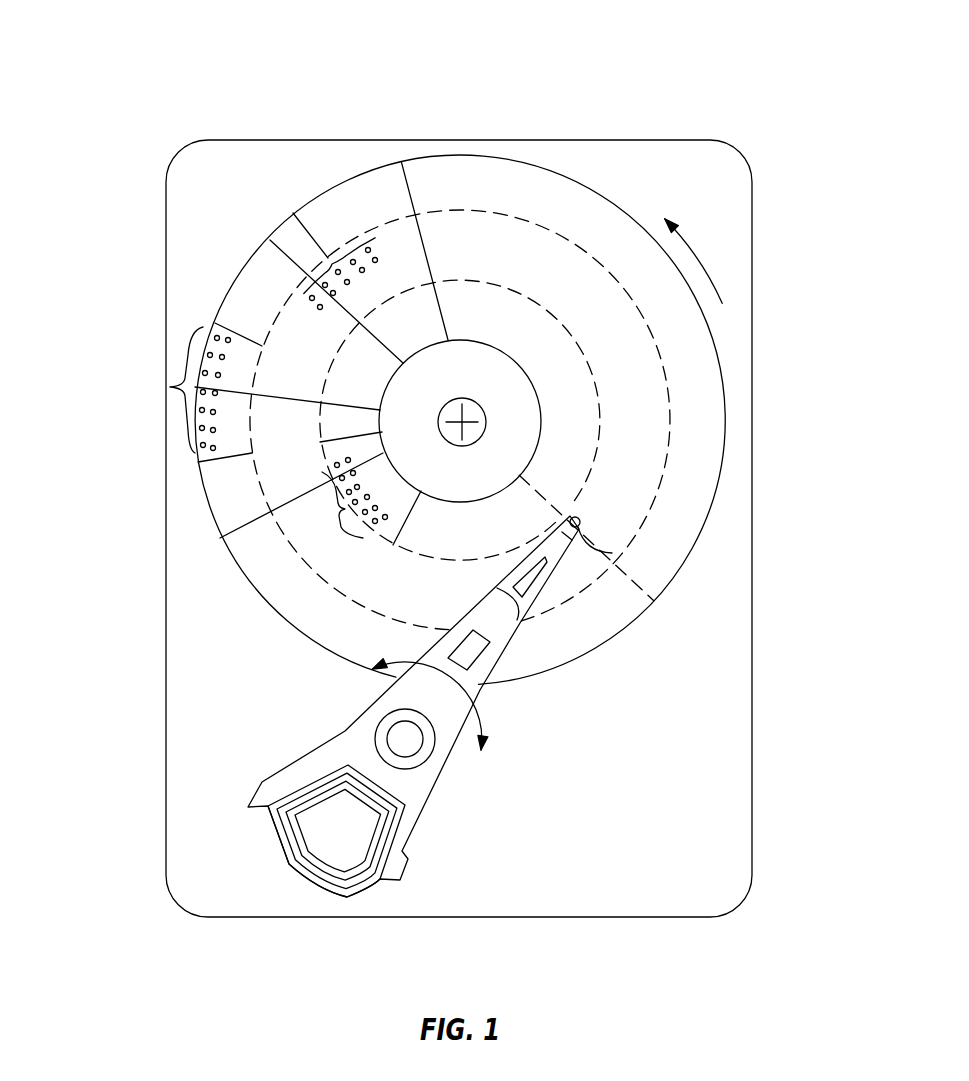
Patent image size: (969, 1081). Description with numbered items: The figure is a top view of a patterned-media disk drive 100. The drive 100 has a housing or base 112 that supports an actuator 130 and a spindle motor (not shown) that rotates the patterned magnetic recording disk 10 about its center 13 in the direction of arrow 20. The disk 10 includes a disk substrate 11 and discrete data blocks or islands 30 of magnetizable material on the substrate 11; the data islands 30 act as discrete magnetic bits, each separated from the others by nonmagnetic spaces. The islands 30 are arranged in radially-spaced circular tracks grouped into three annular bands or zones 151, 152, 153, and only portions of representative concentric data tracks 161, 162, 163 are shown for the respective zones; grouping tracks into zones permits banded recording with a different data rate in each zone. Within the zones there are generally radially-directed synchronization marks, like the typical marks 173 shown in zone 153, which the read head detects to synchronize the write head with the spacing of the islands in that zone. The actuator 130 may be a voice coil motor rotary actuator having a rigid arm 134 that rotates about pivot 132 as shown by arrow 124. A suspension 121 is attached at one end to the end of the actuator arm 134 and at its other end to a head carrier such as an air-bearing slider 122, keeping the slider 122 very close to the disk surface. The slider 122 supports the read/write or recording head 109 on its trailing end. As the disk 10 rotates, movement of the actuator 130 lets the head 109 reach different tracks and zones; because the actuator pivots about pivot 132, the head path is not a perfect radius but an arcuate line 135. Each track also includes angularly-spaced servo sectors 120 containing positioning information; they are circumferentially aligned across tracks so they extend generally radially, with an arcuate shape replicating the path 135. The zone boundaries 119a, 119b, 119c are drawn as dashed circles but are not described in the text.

The patterned-media disk drive 100 is at (165, 56).
The housing or base 112 is at (683, 143).
The patterned magnetic recording disk 10 is at (337, 213).
The disk substrate 11 is at (722, 340).
The disk center 13 is at (478, 410).
The arrow indicating disk rotation direction 20 is at (692, 245).
The data blocks or islands 30 is at (349, 283).
The read/write or recording head 109 is at (581, 518).
The inner zone boundary 119a is at (482, 286).
The middle zone boundary 119b is at (507, 220).
The outer zone 119c is at (594, 200).
The servo sectors 120 is at (408, 198).
The suspension 121 is at (500, 590).
The air-bearing slider 122 is at (615, 552).
The arrow indicating actuator rotation 124 is at (483, 720).
The actuator 130 is at (252, 798).
The pivot 132 is at (398, 737).
The rigid arm 134 is at (464, 627).
The arcuate line 135 is at (645, 592).
The zone 151 is at (600, 387).
The zone 152 is at (650, 407).
The zone 153 is at (712, 420).
The data track 161 is at (341, 498).
The data track 162 is at (292, 212).
The data track 163 is at (168, 385).
The synchronization marks 173 is at (235, 323).